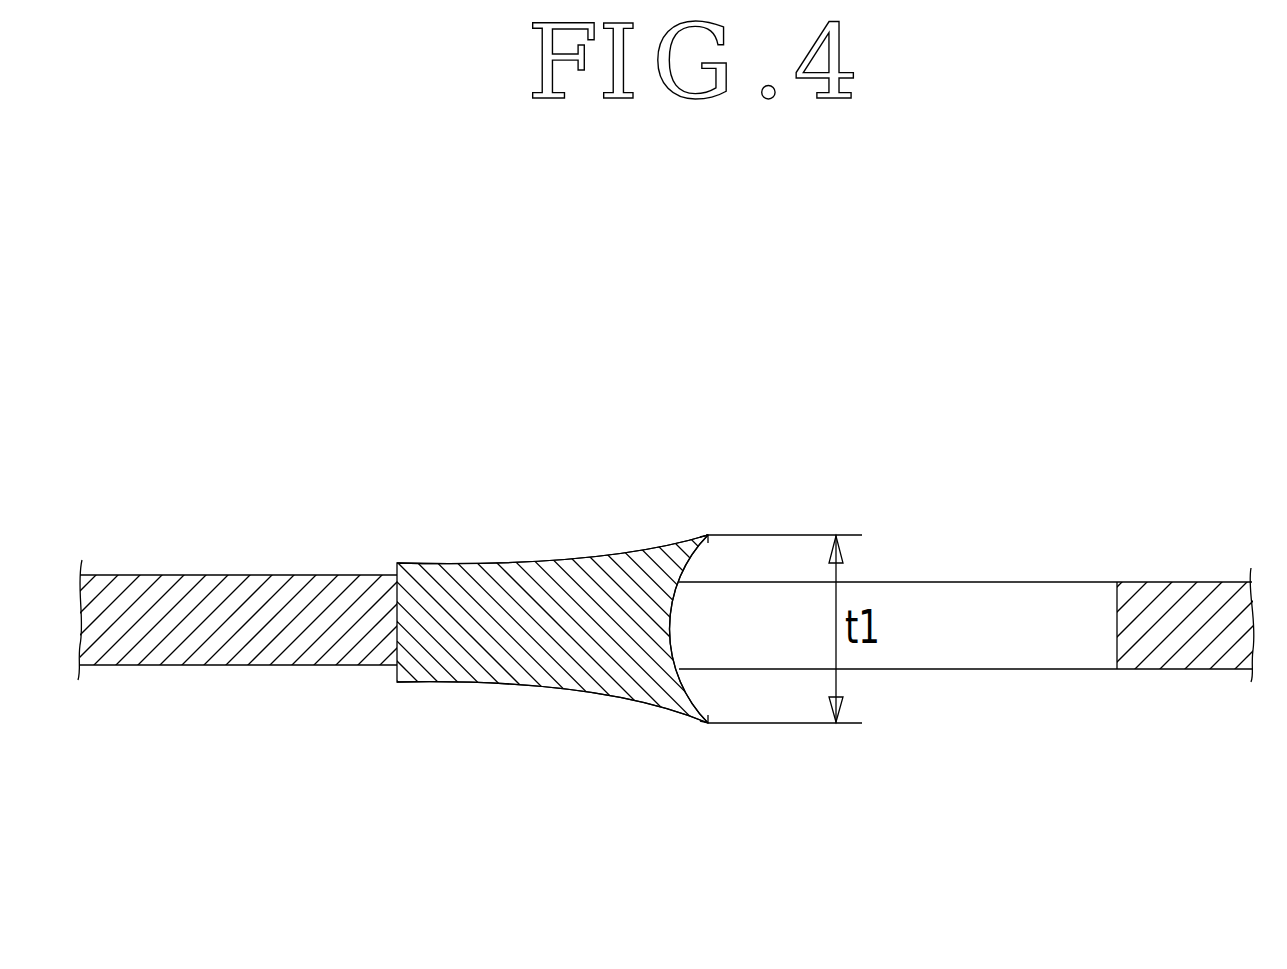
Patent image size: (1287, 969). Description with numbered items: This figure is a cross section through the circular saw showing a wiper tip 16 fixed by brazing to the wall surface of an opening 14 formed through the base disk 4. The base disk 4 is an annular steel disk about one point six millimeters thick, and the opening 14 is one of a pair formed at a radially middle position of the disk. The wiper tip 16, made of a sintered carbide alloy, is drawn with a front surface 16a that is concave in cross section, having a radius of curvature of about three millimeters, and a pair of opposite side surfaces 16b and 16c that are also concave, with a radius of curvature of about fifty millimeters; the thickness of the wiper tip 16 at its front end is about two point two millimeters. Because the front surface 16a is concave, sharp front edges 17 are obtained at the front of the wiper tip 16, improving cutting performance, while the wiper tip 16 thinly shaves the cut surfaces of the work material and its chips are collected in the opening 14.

The base disk 4 is at (223, 628).
The opening 14 is at (1002, 607).
The wiper tip 16 is at (605, 542).
The front surface 16a is at (680, 633).
The side surface 16b is at (470, 563).
The side surface 16c is at (502, 685).
The front edge 17 is at (707, 535).